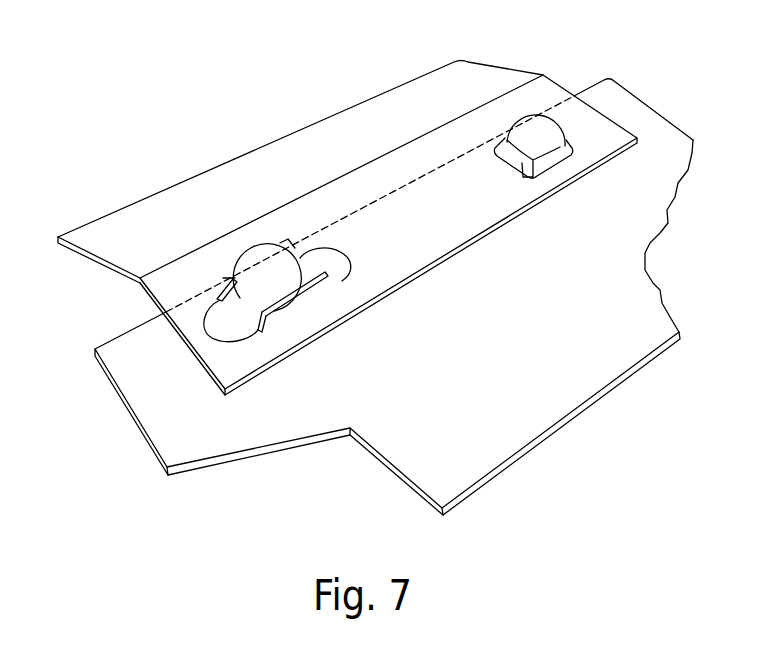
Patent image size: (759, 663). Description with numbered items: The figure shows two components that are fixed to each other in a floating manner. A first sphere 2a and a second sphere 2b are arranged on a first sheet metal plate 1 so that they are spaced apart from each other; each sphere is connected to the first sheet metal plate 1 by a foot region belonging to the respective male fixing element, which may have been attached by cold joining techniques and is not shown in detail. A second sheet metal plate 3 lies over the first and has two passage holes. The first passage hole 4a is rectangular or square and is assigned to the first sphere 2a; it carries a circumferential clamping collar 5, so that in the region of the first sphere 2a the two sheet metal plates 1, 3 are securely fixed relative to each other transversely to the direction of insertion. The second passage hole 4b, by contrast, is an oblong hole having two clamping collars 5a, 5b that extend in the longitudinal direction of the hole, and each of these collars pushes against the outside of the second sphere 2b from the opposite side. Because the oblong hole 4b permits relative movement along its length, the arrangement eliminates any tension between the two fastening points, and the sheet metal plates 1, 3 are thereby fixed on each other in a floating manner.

The first sheet metal plate 1 is at (637, 293).
The second sheet metal plate 3 is at (394, 120).
The first sphere 2a is at (535, 133).
The second sphere 2b is at (265, 273).
The first passage hole 4a is at (565, 142).
The second passage hole 4b is at (314, 265).
The clamping collar 5 is at (555, 157).
The clamping collar 5a is at (305, 295).
The clamping collar 5b is at (234, 280).